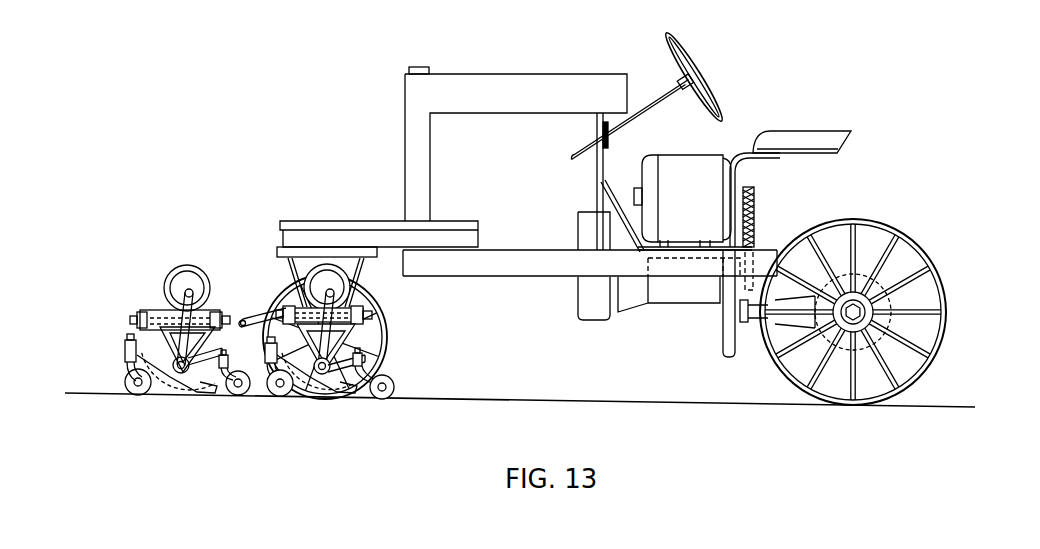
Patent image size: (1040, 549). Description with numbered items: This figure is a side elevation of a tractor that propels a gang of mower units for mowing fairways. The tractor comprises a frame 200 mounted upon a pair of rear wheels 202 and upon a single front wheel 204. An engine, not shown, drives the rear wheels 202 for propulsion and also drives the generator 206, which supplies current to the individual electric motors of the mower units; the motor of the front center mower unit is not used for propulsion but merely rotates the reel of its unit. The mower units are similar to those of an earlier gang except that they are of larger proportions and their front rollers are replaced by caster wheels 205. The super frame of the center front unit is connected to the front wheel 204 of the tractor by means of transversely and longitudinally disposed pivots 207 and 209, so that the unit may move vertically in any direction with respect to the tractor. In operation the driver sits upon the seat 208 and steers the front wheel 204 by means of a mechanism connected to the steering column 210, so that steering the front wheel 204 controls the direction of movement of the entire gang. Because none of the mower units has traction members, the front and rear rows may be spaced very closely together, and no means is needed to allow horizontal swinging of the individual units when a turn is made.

The frame 200 is at (550, 268).
The rear wheels 202 is at (920, 256).
The front wheel 204 is at (386, 321).
The caster wheels 205 is at (133, 391).
The generator 206 is at (675, 163).
The pivot 207 is at (243, 315).
The seat 208 is at (818, 137).
The pivot 209 is at (133, 318).
The steering column 210 is at (647, 107).